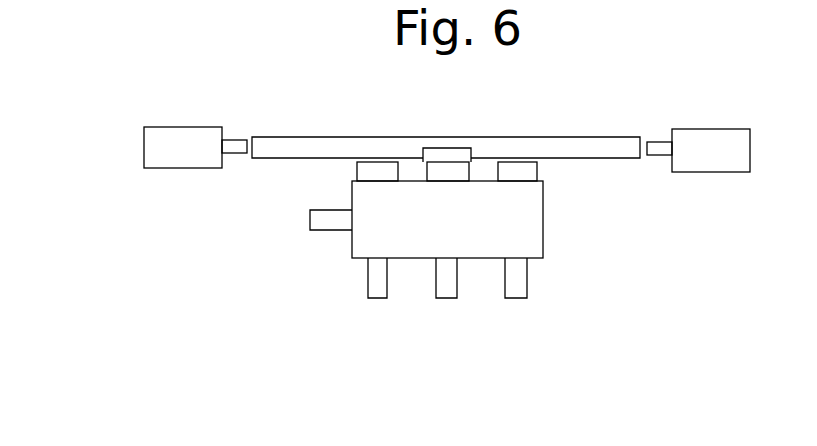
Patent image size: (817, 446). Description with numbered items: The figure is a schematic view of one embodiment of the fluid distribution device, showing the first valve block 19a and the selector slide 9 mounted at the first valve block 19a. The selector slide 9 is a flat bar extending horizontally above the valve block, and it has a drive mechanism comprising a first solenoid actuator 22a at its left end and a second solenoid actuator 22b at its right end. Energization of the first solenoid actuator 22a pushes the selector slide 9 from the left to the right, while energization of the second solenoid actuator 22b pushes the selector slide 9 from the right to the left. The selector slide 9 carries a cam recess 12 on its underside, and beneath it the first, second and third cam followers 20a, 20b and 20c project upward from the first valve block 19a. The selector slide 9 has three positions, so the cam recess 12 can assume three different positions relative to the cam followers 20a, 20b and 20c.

The selector slide 9 is at (590, 147).
The cam recess 12 is at (438, 150).
The first valve block 19a is at (372, 242).
The first cam follower 20a is at (367, 172).
The second cam follower 20b is at (452, 172).
The third cam follower 20c is at (525, 170).
The first solenoid actuator 22a is at (175, 153).
The second solenoid actuator 22b is at (728, 165).